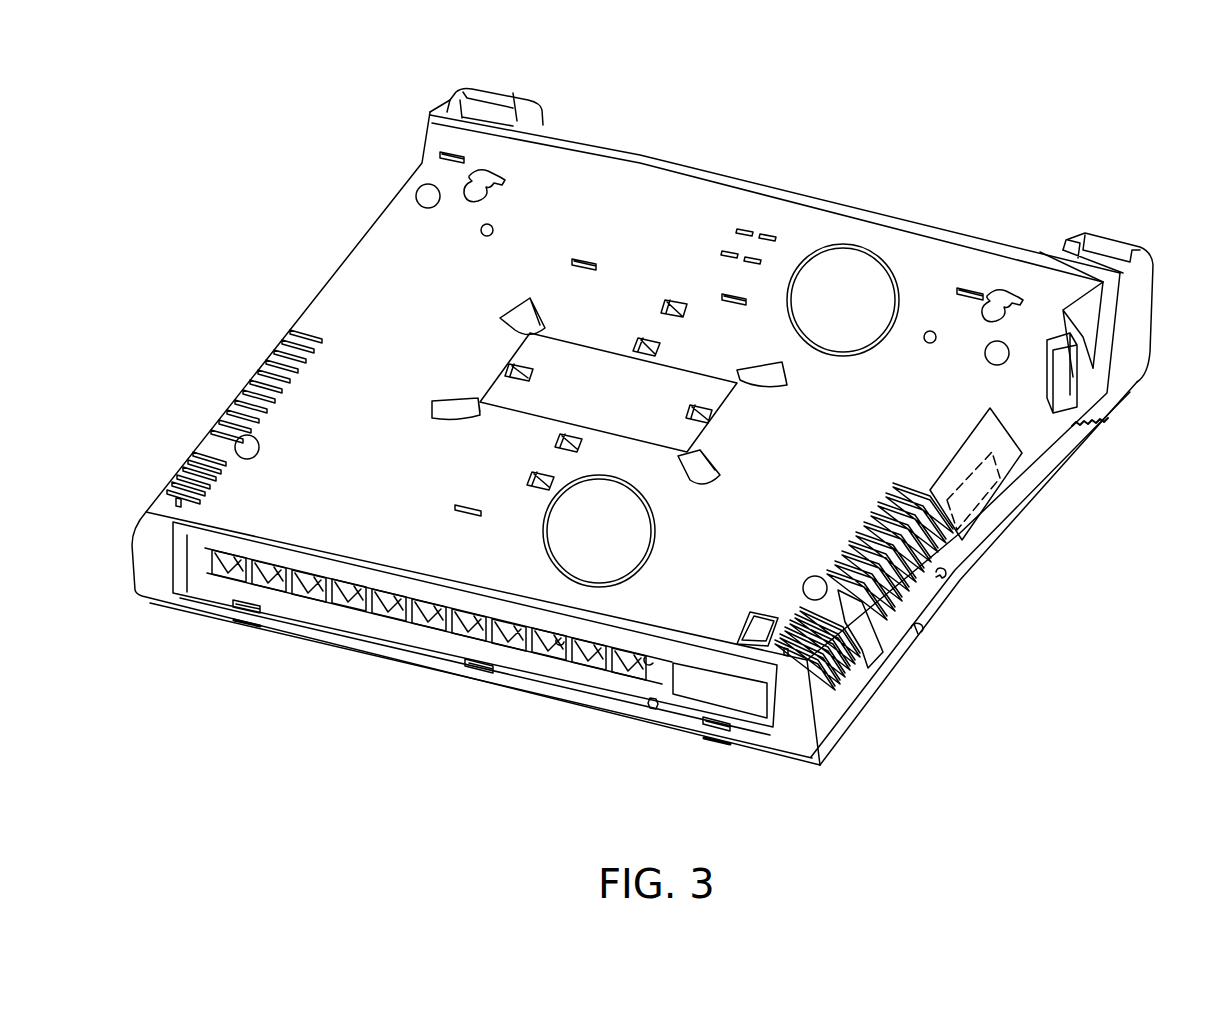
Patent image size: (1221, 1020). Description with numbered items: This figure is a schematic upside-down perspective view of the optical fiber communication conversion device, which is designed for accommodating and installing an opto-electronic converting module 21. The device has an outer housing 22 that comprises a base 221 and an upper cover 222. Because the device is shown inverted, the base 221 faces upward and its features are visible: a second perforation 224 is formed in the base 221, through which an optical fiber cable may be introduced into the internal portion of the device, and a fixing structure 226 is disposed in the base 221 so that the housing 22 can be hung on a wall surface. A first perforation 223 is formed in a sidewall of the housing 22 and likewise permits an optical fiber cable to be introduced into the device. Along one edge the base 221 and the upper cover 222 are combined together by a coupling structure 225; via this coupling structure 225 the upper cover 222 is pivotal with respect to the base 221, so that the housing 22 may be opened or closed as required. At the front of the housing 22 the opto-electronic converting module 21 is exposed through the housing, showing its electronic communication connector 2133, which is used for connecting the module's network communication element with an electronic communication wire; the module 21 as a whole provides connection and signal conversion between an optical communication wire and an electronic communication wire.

The opto-electronic converting module 21 is at (403, 623).
The electronic communication connector 2133 is at (312, 596).
The outer housing 22 is at (1075, 403).
The base 221 is at (1032, 413).
The upper cover 222 is at (1042, 494).
The first perforation 223 is at (922, 632).
The second perforation 224 is at (843, 273).
The coupling structure 225 is at (458, 96).
The fixing structure 226 is at (482, 177).